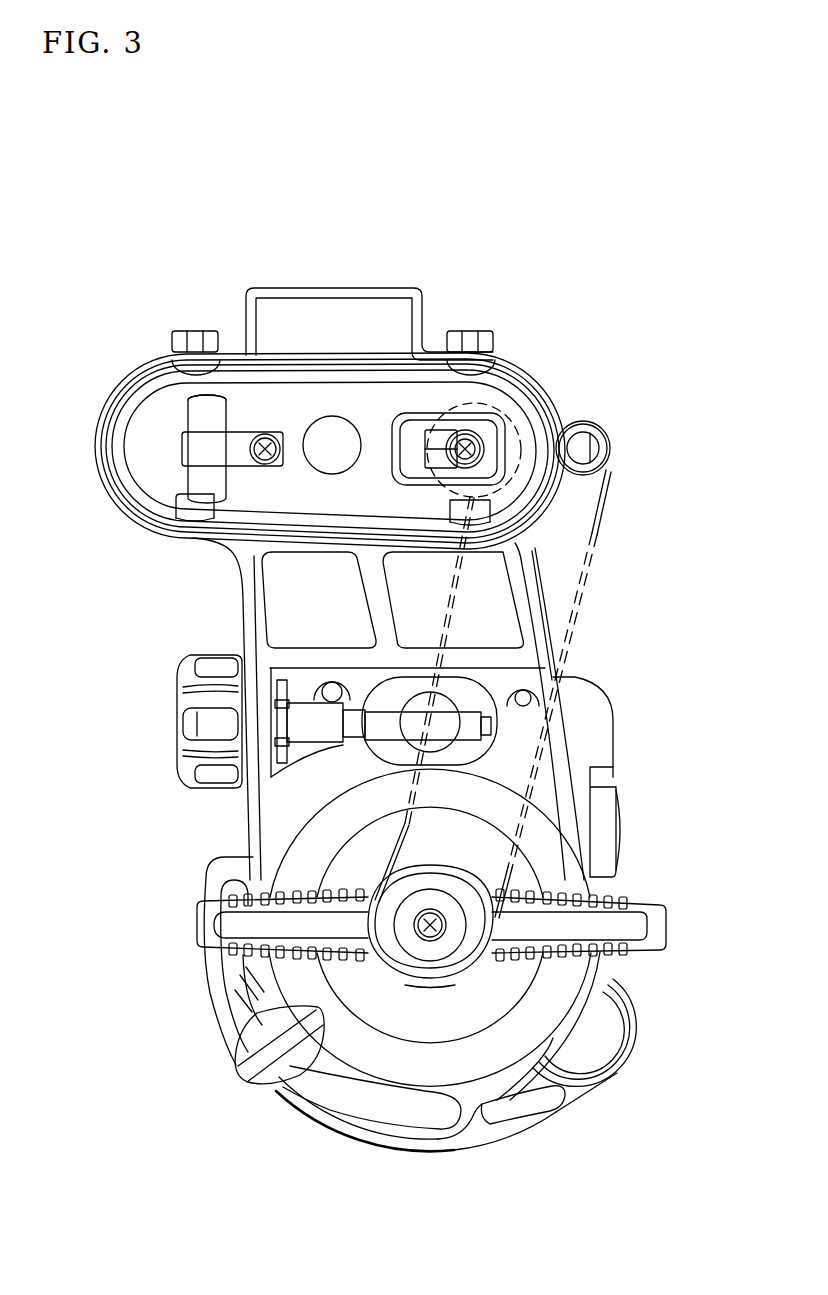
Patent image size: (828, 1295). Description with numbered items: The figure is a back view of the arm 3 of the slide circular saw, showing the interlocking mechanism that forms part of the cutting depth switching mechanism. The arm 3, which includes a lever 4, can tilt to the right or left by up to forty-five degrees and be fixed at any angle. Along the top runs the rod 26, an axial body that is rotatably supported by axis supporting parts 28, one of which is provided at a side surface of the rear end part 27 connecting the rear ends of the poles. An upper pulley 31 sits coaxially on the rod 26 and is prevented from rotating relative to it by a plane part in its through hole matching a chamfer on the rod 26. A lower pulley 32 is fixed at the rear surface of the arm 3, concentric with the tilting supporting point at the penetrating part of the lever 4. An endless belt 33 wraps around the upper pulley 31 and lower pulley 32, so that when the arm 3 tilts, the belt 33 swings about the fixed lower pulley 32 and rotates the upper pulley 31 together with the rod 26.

The arm 3 is at (255, 617).
The lever 4 is at (550, 930).
The rod 26 is at (580, 448).
The rear end part 27 is at (385, 392).
The axis supporting part 28 is at (600, 447).
The upper pulley 31 is at (603, 487).
The lower pulley 32 is at (490, 877).
The endless belt 33 is at (570, 640).